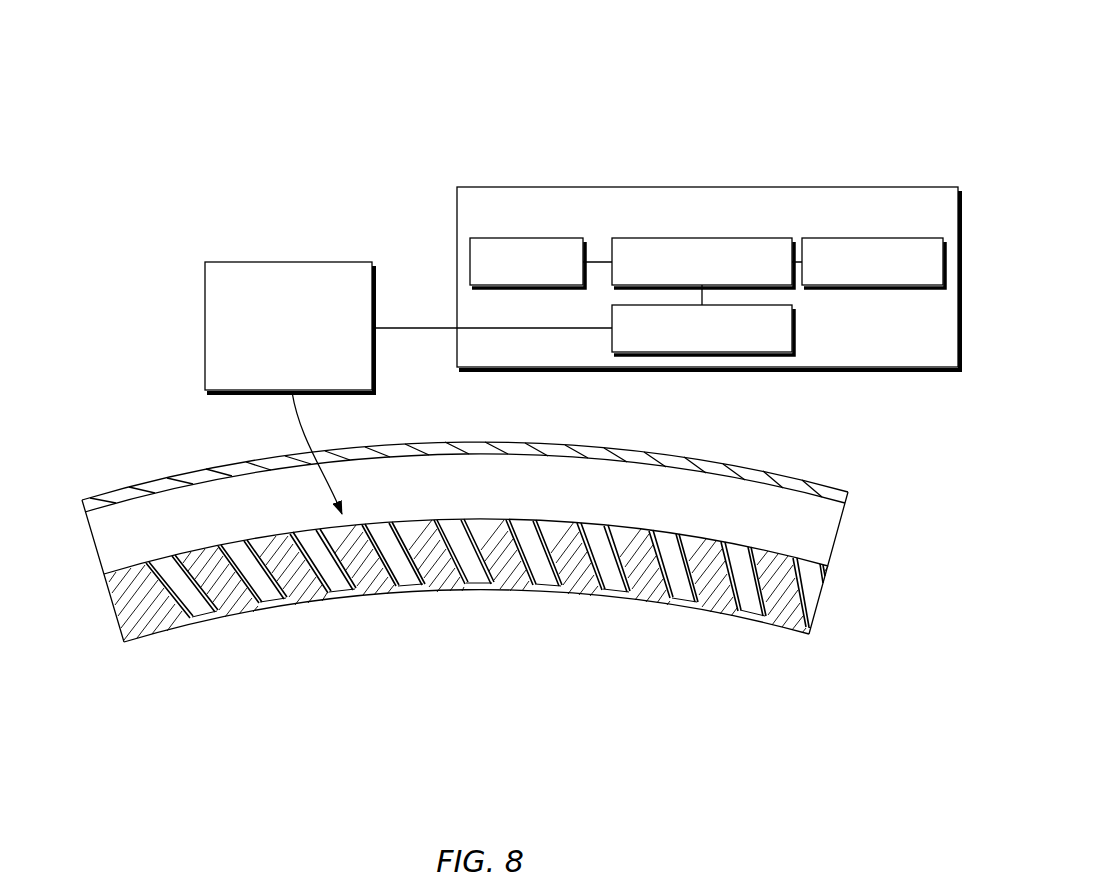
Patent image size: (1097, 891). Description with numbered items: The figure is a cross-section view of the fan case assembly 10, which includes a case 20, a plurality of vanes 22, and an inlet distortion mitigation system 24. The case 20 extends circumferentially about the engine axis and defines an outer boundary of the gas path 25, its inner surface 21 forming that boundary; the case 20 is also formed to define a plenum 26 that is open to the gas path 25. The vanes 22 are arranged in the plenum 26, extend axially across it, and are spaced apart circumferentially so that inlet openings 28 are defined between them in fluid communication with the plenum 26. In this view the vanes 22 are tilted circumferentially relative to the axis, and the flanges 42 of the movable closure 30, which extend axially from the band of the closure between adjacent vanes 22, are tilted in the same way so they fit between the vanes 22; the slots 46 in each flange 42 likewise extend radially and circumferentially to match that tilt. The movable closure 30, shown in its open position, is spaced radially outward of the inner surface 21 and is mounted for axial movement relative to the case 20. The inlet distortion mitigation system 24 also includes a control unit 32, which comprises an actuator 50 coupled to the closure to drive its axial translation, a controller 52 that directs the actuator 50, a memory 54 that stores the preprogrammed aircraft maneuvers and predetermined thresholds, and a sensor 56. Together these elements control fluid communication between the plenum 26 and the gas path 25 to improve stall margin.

The fan case assembly 10 is at (90, 210).
The case 20 is at (115, 480).
The inner surface 21 is at (168, 630).
The vanes 22 is at (312, 520).
The inlet distortion mitigation system 24 is at (673, 123).
The gas path 25 is at (447, 719).
The plenum 26 is at (671, 515).
The inlet openings 28 is at (337, 600).
The movable closure 30 is at (326, 262).
The control unit 32 is at (660, 187).
The flanges 42 is at (583, 513).
The slots 46 is at (480, 588).
The actuator 50 is at (795, 327).
The controller 52 is at (612, 280).
The memory 54 is at (870, 238).
The sensor 56 is at (530, 238).